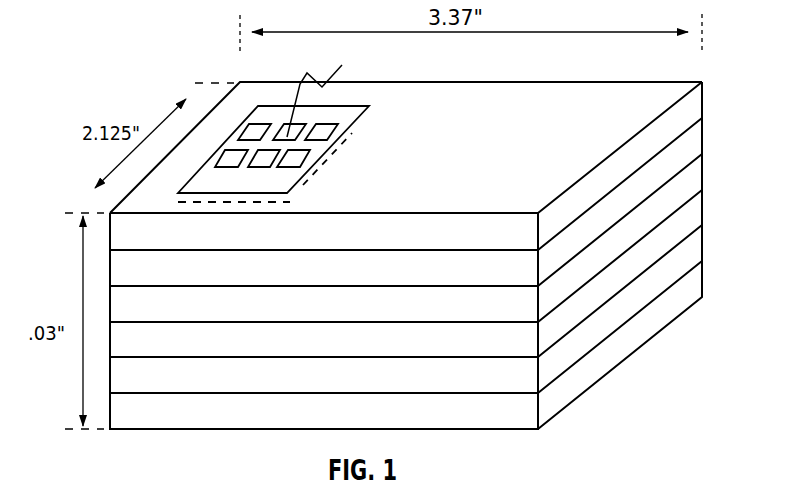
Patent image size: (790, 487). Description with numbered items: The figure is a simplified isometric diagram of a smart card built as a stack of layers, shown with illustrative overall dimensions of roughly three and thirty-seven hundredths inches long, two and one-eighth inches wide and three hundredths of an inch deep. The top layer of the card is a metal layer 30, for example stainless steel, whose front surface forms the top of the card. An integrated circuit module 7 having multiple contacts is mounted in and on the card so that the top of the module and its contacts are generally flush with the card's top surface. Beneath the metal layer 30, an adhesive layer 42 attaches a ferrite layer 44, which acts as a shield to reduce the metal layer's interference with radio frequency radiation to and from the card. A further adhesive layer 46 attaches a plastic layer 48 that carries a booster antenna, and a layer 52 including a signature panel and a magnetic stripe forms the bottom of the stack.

The integrated circuit (IC) module 7 is at (345, 112).
The metal layer 30 is at (406, 166).
The adhesive layer 42 is at (406, 220).
The ferrite layer 44 is at (406, 256).
The adhesive layer 46 is at (406, 291).
The plastic layer 48 is at (406, 327).
The layer including signature panel and magnetic stripe 52 is at (406, 255).